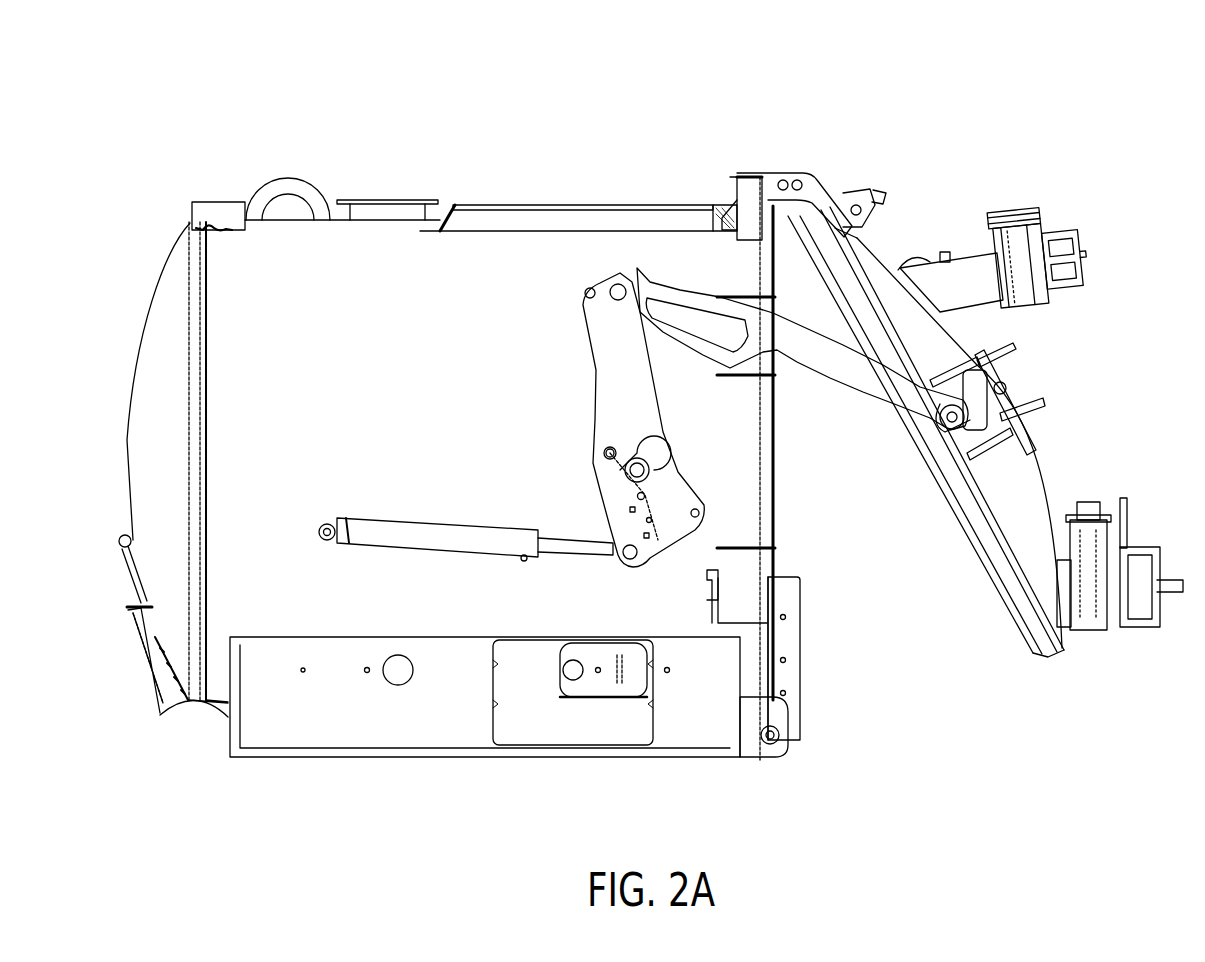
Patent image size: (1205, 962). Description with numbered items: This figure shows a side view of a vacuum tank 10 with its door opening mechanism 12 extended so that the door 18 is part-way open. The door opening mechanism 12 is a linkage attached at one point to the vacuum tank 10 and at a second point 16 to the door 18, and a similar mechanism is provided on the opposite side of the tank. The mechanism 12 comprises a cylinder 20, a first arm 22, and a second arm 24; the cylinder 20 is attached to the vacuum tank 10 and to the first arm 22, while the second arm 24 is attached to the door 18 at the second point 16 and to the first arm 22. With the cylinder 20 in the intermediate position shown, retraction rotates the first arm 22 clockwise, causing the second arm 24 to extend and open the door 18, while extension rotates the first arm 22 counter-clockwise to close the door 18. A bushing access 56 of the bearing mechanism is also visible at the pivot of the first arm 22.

The vacuum tank 10 is at (325, 92).
The door opening mechanism 12 is at (622, 320).
The second point 16 is at (1005, 372).
The door 18 is at (1022, 485).
The cylinder 20 is at (432, 537).
The first arm 22 is at (624, 408).
The second arm 24 is at (815, 355).
The bushing access 56 is at (642, 496).